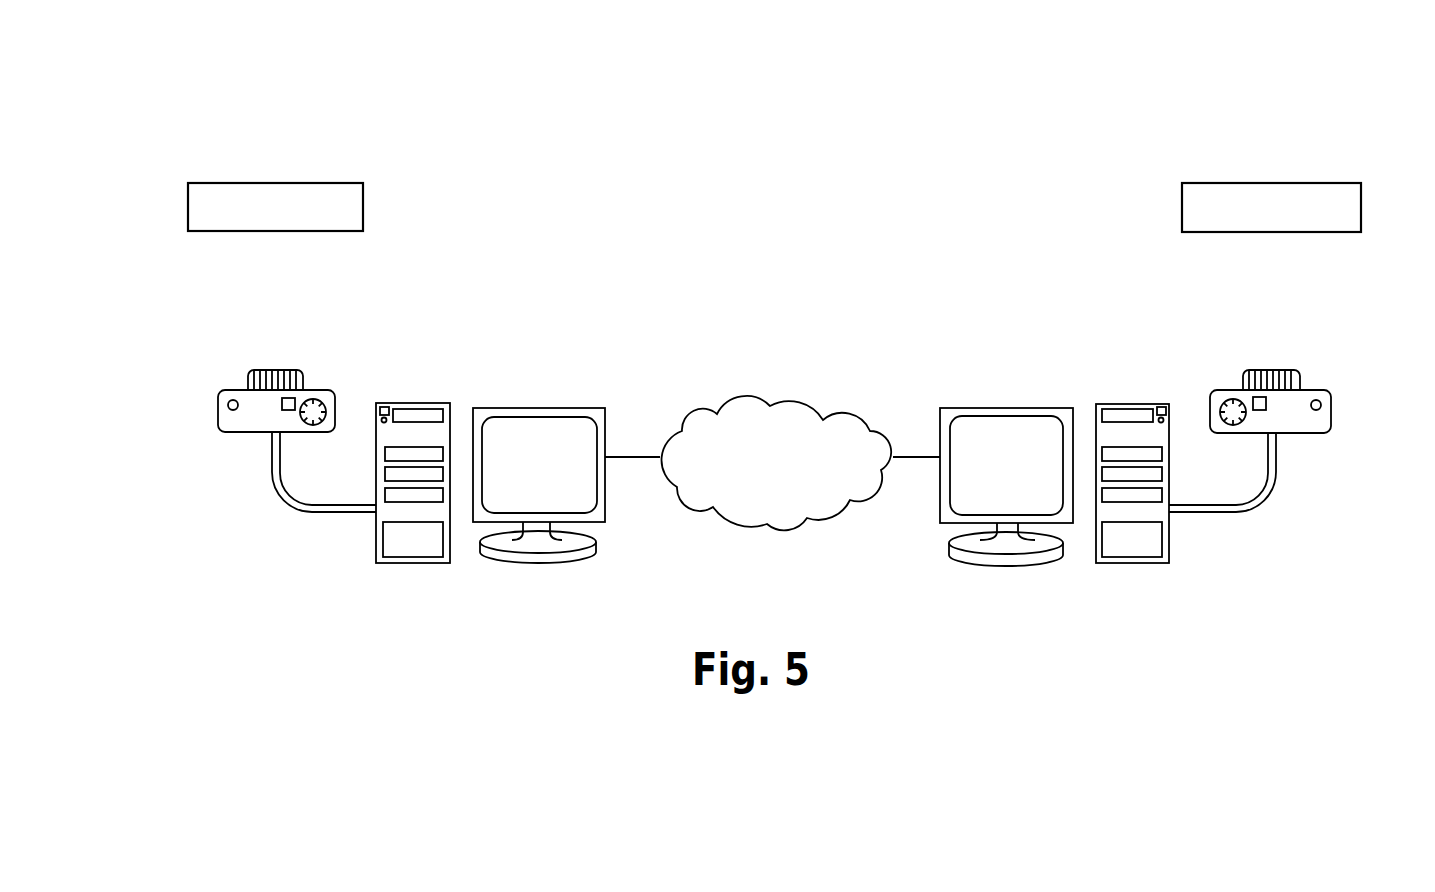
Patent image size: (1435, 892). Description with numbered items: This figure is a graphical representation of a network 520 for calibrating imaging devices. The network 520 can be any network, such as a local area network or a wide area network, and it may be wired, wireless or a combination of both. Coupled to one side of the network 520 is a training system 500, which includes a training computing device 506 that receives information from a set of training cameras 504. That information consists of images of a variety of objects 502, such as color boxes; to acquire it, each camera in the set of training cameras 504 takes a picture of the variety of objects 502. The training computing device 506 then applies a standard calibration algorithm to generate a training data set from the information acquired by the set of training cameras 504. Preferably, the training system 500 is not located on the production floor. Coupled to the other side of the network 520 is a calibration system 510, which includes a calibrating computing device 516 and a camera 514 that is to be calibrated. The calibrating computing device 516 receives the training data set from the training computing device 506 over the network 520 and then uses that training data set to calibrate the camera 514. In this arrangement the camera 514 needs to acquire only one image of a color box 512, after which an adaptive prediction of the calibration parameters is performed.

The training system 500 is at (515, 124).
The variety of objects 502 is at (364, 205).
The set of training cameras 504 is at (218, 412).
The training computing device 506 is at (512, 408).
The calibration system 510 is at (988, 124).
The color box 512 is at (1182, 203).
The camera 514 is at (1331, 415).
The calibrating computing device 516 is at (1033, 408).
The network 520 is at (797, 398).